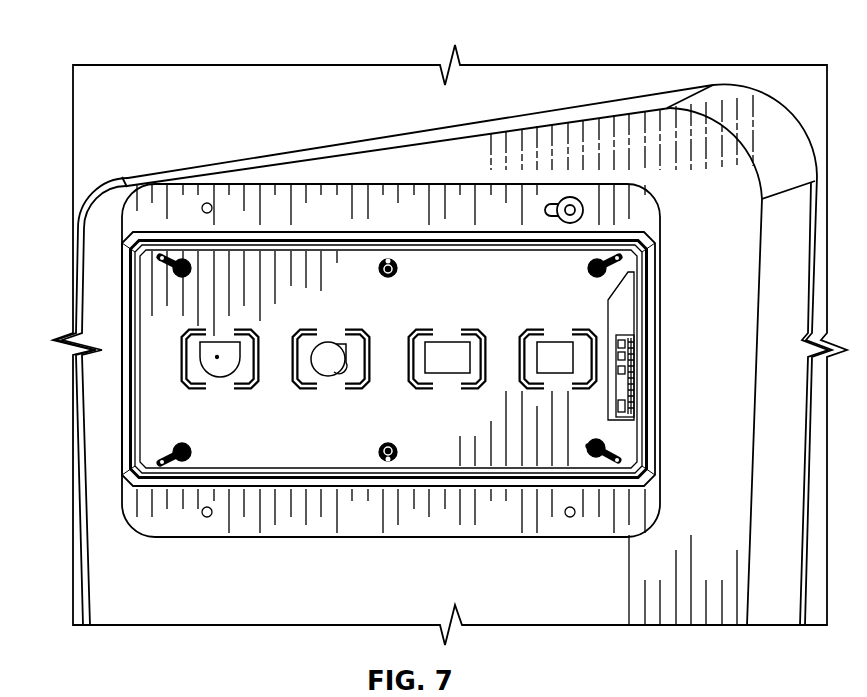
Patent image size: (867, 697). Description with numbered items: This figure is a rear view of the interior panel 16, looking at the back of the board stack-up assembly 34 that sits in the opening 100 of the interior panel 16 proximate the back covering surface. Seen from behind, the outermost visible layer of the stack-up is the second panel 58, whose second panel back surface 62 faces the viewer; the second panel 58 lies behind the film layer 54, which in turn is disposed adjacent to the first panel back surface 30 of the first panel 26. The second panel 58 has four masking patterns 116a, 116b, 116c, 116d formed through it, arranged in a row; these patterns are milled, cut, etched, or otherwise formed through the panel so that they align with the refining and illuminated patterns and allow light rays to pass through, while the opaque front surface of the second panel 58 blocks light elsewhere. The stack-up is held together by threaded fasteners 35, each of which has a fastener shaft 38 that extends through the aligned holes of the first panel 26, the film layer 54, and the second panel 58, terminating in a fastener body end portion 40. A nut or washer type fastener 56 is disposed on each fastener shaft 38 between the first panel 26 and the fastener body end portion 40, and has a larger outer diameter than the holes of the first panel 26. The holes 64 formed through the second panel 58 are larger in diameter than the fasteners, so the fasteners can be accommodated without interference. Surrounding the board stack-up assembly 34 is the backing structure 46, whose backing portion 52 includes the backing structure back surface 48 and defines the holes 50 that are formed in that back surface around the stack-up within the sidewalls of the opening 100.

The interior panel 16 is at (552, 45).
The first panel 26 is at (624, 306).
The first panel back surface 30 is at (636, 338).
The board stack-up assembly 34 is at (427, 203).
The fastener 35 is at (619, 458).
The fastener shaft 38 is at (602, 443).
The fastener body end portion 40 is at (652, 480).
The backing structure 46 is at (330, 198).
The backing structure back surface 48 is at (385, 198).
The hole 50 is at (207, 203).
The backing portion 52 is at (103, 575).
The film layer 54 is at (215, 357).
The fastener 56 is at (592, 438).
The second panel 58 is at (163, 412).
The second panel back surface 62 is at (163, 455).
The hole 64 is at (582, 446).
The opening 100 is at (623, 237).
The masking pattern 116a is at (220, 372).
The masking pattern 116b is at (327, 370).
The masking pattern 116c is at (440, 365).
The masking pattern 116d is at (557, 347).